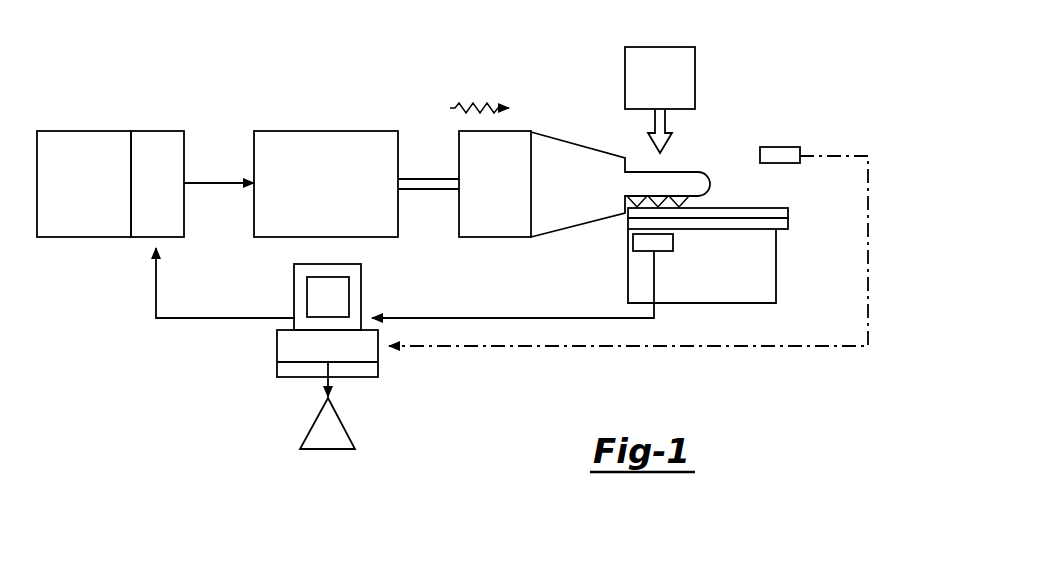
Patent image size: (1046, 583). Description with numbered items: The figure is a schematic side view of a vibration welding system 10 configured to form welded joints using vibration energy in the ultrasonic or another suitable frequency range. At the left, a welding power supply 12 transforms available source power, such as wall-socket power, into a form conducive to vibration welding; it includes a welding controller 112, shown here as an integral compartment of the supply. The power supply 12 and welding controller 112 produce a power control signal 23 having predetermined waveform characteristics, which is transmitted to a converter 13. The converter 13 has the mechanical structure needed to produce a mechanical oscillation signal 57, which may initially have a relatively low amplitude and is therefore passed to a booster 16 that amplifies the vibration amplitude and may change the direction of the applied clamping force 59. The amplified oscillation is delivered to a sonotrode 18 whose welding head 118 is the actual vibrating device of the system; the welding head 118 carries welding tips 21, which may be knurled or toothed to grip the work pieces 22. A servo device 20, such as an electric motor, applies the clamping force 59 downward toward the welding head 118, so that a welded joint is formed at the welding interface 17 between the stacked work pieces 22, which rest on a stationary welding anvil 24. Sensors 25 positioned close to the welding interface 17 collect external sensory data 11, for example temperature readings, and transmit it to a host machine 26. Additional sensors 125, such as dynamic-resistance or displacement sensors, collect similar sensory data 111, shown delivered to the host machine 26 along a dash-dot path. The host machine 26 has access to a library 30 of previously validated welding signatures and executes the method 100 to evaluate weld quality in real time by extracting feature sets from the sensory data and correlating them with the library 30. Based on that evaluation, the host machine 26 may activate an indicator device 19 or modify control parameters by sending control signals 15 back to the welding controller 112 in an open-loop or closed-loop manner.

The vibration welding system 10 is at (799, 68).
The external sensory data 11 is at (513, 284).
The welding power supply 12 is at (93, 199).
The welding controller 112 is at (168, 199).
The converter 13 is at (335, 199).
The control signals 15 is at (207, 315).
The booster 16 is at (504, 199).
The welding interface 17 is at (627, 216).
The sonotrode 18 is at (587, 199).
The indicator device 19 is at (343, 425).
The servo device 20 is at (669, 90).
The welding tips 21 is at (703, 200).
The work pieces 22 is at (797, 203).
The power control signal 23 is at (219, 168).
The welding anvil 24 is at (709, 280).
The sensors 25 is at (633, 245).
The host machine 26 is at (362, 277).
The library 30 is at (380, 370).
The mechanical oscillation signal 57 is at (479, 95).
The clamping force 59 is at (655, 122).
The method 100 is at (277, 370).
The sensory data 111 is at (838, 143).
The welding head 118 is at (677, 172).
The additional sensors 125 is at (782, 147).